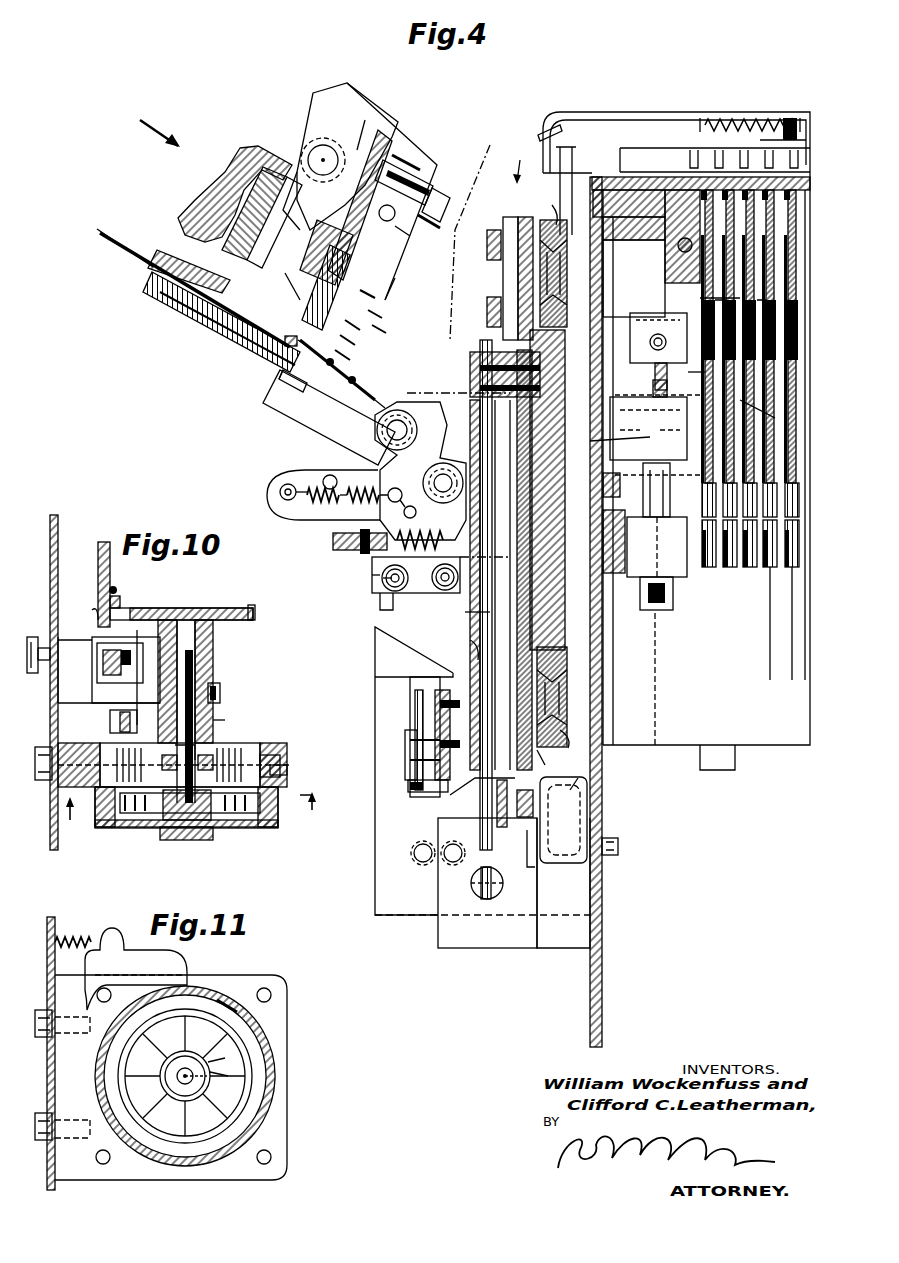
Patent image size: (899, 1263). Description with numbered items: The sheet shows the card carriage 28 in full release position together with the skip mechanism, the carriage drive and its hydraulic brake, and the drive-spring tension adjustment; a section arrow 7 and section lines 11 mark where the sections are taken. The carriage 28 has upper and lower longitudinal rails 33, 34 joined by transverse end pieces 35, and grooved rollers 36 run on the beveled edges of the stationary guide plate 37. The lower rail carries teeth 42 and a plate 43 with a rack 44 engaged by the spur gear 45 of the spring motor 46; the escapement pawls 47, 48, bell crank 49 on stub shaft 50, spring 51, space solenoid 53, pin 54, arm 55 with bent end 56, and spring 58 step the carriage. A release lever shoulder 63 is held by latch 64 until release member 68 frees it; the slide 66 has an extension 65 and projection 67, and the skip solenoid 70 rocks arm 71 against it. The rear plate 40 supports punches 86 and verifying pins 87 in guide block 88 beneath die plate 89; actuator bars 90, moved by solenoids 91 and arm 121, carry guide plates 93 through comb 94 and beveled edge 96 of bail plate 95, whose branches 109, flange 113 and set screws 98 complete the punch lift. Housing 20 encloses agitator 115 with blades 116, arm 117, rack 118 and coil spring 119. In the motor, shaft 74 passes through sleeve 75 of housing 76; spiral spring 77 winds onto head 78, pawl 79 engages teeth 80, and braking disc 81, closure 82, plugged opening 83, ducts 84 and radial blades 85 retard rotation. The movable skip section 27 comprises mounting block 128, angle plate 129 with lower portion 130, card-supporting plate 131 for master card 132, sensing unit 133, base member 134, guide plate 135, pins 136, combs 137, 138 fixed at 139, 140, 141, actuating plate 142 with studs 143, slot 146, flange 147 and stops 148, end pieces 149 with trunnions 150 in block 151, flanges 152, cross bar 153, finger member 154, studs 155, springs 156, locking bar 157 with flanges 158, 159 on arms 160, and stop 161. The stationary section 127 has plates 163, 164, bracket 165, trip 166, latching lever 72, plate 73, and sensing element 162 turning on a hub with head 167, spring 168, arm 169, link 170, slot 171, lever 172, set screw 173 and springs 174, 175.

In FIG. 4, the section arrow 7 is at (160, 127).
In FIG. 10, the section line 11 is at (202, 814).
In FIG. 4, the housing 20 is at (628, 112).
In FIG. 4, the movable section of skip mechanism 27 is at (407, 154).
In FIG. 4, the card carriage 28 is at (519, 163).
In FIG. 4, the upper longitudinal rail 33 is at (518, 265).
In FIG. 4, the lower longitudinal rail 34 is at (548, 763).
In FIG. 10, the lower longitudinal rail 34 is at (103, 542).
In FIG. 4, the transverse end pieces 35 is at (503, 225).
In FIG. 4, the grooved rollers 36 is at (560, 312).
In FIG. 4, the stationary guide plate 37 is at (556, 516).
In FIG. 4, the rear plate 40 is at (602, 966).
In FIG. 10, the rear plate 40 is at (56, 515).
In FIG. 11, the rear plate 40 is at (55, 922).
In FIG. 4, the teeth 42 is at (577, 774).
In FIG. 10, the teeth 42 is at (95, 608).
In FIG. 10, the plate 43 is at (115, 587).
In FIG. 10, the rack 44 is at (120, 605).
In FIG. 10, the spur gear 45 is at (246, 608).
In FIG. 10, the spring motor 46 is at (238, 746).
In FIG. 11, the spring motor 46 is at (275, 1132).
In FIG. 10, the pawl 47 is at (85, 640).
In FIG. 4, the pawl 48 is at (545, 796).
In FIG. 10, the bell crank 49 is at (139, 700).
In FIG. 10, the stub shaft 50 is at (109, 692).
In FIG. 10, the spring 51 is at (110, 722).
In FIG. 4, the space solenoid 53 is at (484, 935).
In FIG. 10, the pin 54 is at (112, 650).
In FIG. 4, the arm 55 is at (497, 815).
In FIG. 10, the arm 55 is at (110, 660).
In FIG. 4, the bent end 56 is at (517, 826).
In FIG. 4, the spring 58 is at (497, 883).
In FIG. 4, the shoulder 63 is at (432, 700).
In FIG. 4, the latch 64 is at (432, 712).
In FIG. 4, the extension 65 is at (410, 790).
In FIG. 4, the slide 66 is at (530, 582).
In FIG. 4, the projection 67 is at (450, 795).
In FIG. 4, the release member 68 is at (574, 739).
In FIG. 4, the skip solenoid 70 is at (385, 652).
In FIG. 4, the arm 71 is at (418, 780).
In FIG. 4, the latching lever 72 is at (465, 612).
In FIG. 4, the plate 73 is at (470, 640).
In FIG. 10, the rotatable shaft 74 is at (194, 652).
In FIG. 11, the rotatable shaft 74 is at (178, 1078).
In FIG. 10, the sleeve 75 is at (213, 660).
In FIG. 10, the housing 76 is at (262, 745).
In FIG. 11, the housing 76 is at (272, 1095).
In FIG. 10, the spiral spring 77 is at (287, 750).
In FIG. 10, the head 78 is at (218, 722).
In FIG. 11, the pawl 79 is at (118, 966).
In FIG. 11, the teeth 80 is at (240, 1012).
In FIG. 10, the braking element 81 is at (240, 812).
In FIG. 11, the braking element 81 is at (210, 1072).
In FIG. 10, the stationary closure 82 is at (130, 827).
In FIG. 10, the plugged opening 83 is at (220, 685).
In FIG. 10, the ducts 84 is at (176, 750).
In FIG. 11, the ducts 84 is at (185, 1068).
In FIG. 10, the radial blades 85 is at (148, 812).
In FIG. 11, the radial blades 85 is at (192, 1102).
In FIG. 4, the punches 86 is at (700, 298).
In FIG. 4, the verifying pins 87 is at (678, 246).
In FIG. 4, the guide block 88 is at (665, 262).
In FIG. 4, the die plate 89 is at (668, 178).
In FIG. 4, the actuator bar 90 is at (687, 371).
In FIG. 4, the solenoid 91 is at (680, 653).
In FIG. 4, the guide plates 93 is at (764, 417).
In FIG. 4, the comb 94 is at (625, 300).
In FIG. 4, the bail plate 95 is at (607, 443).
In FIG. 4, the beveled edge 96 is at (640, 440).
In FIG. 4, the set screws 98 is at (645, 600).
In FIG. 4, the branches 109 is at (649, 375).
In FIG. 4, the flange 113 is at (640, 313).
In FIG. 4, the agitator 115 is at (782, 118).
In FIG. 4, the blades 116 is at (715, 160).
In FIG. 4, the depending arm 117 is at (564, 150).
In FIG. 4, the rack 118 is at (552, 212).
In FIG. 4, the coil spring 119 is at (712, 118).
In FIG. 4, the arm 121 is at (760, 568).
In FIG. 4, the stationary section of skip mechanism 127 is at (422, 402).
In FIG. 4, the mounting block 128 is at (482, 231).
In FIG. 4, the angle plate 129 is at (385, 128).
In FIG. 4, the lower portion 130 is at (170, 252).
In FIG. 4, the card-supporting plate 131 is at (145, 262).
In FIG. 4, the master card 132 is at (110, 228).
In FIG. 4, the sensing unit 133 is at (395, 278).
In FIG. 4, the base member 134 is at (215, 318).
In FIG. 4, the guide plate 135 is at (245, 345).
In FIG. 4, the pins 136 is at (298, 345).
In FIG. 4, the upper fixed comb 137 is at (326, 252).
In FIG. 4, the upper fixed comb 138 is at (410, 236).
In FIG. 4, the rivet 139 is at (338, 210).
In FIG. 4, the enlargements 140 is at (430, 178).
In FIG. 4, the securing point 141 is at (445, 197).
In FIG. 4, the pin-actuating plate 142 is at (298, 296).
In FIG. 4, the studs 143 is at (320, 262).
In FIG. 4, the slot 146 is at (412, 159).
In FIG. 4, the flange 147 is at (285, 344).
In FIG. 4, the stop 148 is at (368, 329).
In FIG. 4, the end pieces 149 is at (368, 118).
In FIG. 4, the trunnions 150 is at (318, 150).
In FIG. 4, the block 151 is at (326, 92).
In FIG. 4, the flanges 152 is at (278, 168).
In FIG. 4, the cross bar 153 is at (260, 162).
In FIG. 4, the finger contact member 154 is at (222, 176).
In FIG. 4, the studs 155 is at (438, 218).
In FIG. 4, the springs 156 is at (377, 298).
In FIG. 4, the pin-locking bar 157 is at (355, 345).
In FIG. 4, the flange 158 is at (350, 360).
In FIG. 4, the lateral flanges 159 is at (382, 318).
In FIG. 4, the arms 160 is at (386, 333).
In FIG. 4, the stop 161 is at (327, 370).
In FIG. 4, the sensing element 162 is at (300, 412).
In FIG. 4, the plate 163 is at (545, 428).
In FIG. 4, the plate 164 is at (495, 488).
In FIG. 4, the bracket 165 is at (300, 470).
In FIG. 4, the trip 166 is at (487, 312).
In FIG. 4, the tapered head 167 is at (279, 380).
In FIG. 4, the spring 168 is at (290, 502).
In FIG. 4, the lower arm 169 is at (355, 552).
In FIG. 4, the link 170 is at (405, 595).
In FIG. 4, the slotted connection 171 is at (382, 580).
In FIG. 4, the slide-actuating lever 172 is at (320, 505).
In FIG. 4, the set screw 173 is at (390, 540).
In FIG. 4, the spring 174 is at (345, 510).
In FIG. 4, the spring 175 is at (375, 595).